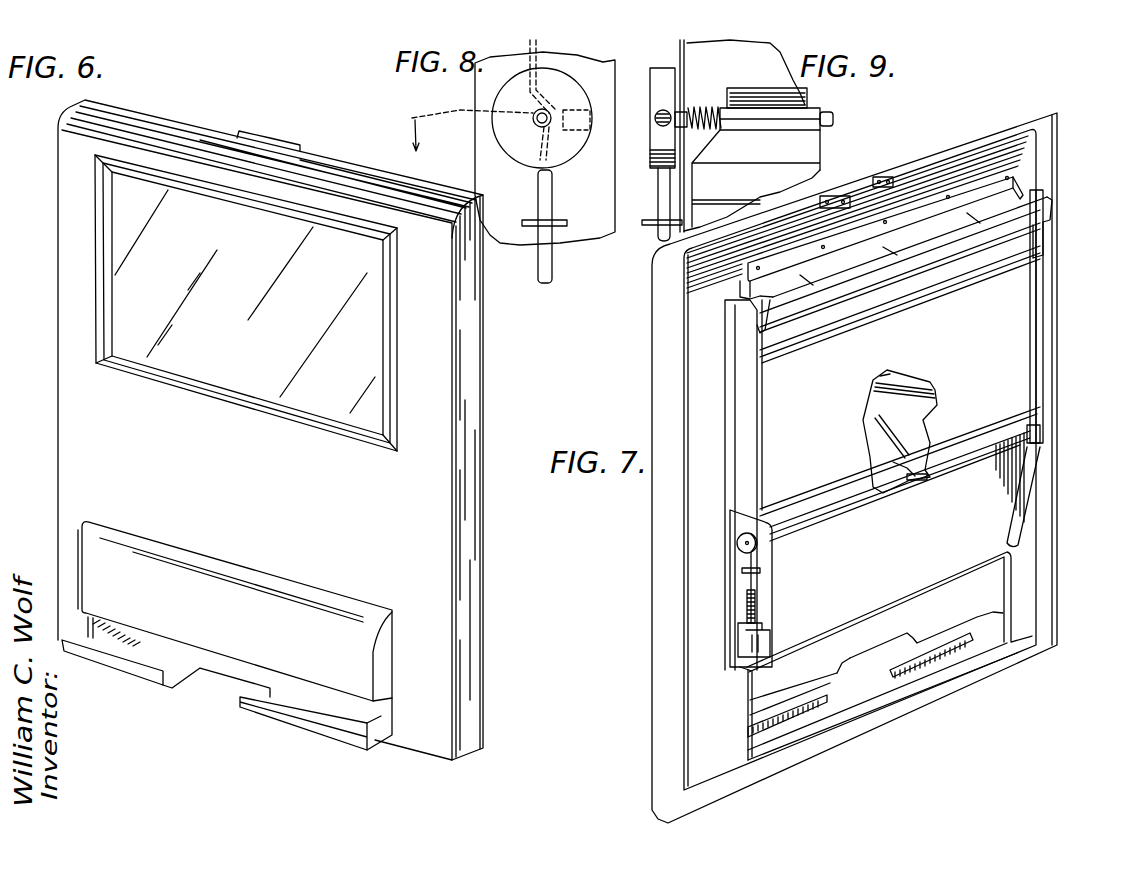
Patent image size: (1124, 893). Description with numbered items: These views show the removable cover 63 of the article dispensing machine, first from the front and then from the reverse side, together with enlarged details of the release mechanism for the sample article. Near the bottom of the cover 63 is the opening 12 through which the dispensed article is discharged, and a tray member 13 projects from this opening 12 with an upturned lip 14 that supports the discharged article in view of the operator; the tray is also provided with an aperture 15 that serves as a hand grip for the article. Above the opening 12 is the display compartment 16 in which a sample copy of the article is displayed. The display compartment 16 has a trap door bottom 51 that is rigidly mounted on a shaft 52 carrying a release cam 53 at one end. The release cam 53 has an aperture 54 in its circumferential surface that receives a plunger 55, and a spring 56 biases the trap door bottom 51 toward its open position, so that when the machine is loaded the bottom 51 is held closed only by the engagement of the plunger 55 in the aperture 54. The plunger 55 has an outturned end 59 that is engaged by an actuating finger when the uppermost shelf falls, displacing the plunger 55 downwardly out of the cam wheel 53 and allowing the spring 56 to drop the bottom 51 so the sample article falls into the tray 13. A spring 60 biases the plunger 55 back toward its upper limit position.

In FIG. 6, the opening 12 is at (383, 704).
In FIG. 7, the opening 12 is at (1008, 627).
In FIG. 6, the tray member 13 is at (373, 743).
In FIG. 7, the tray member 13 is at (793, 735).
In FIG. 6, the upturned lip 14 is at (117, 659).
In FIG. 7, the upturned lip 14 is at (940, 637).
In FIG. 6, the aperture 15 is at (178, 682).
In FIG. 7, the aperture 15 is at (900, 698).
In FIG. 6, the display compartment 16 is at (227, 372).
In FIG. 7, the display compartment 16 is at (925, 397).
In FIG. 8, the trap door bottom 51 is at (540, 200).
In FIG. 9, the trap door bottom 51 is at (815, 145).
In FIG. 7, the trap door bottom 51 is at (913, 452).
In FIG. 8, the shaft 52 is at (553, 111).
In FIG. 9, the shaft 52 is at (835, 119).
In FIG. 7, the shaft 52 is at (925, 480).
In FIG. 8, the release cam 53 is at (570, 152).
In FIG. 9, the release cam 53 is at (658, 68).
In FIG. 7, the release cam 53 is at (738, 540).
In FIG. 8, the aperture 54 is at (574, 130).
In FIG. 9, the aperture 54 is at (655, 117).
In FIG. 8, the plunger 55 is at (551, 259).
In FIG. 9, the plunger 55 is at (659, 196).
In FIG. 7, the plunger 55 is at (745, 585).
In FIG. 9, the spring 56 is at (700, 105).
In FIG. 7, the outturned end 59 is at (770, 652).
In FIG. 7, the spring 60 is at (745, 612).
In FIG. 6, the cover 63 is at (66, 167).
In FIG. 8, the cover 63 is at (593, 237).
In FIG. 7, the cover 63 is at (652, 343).